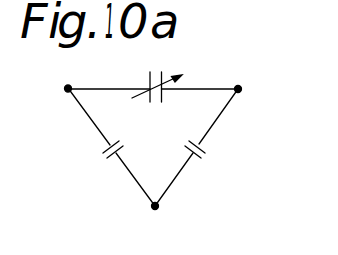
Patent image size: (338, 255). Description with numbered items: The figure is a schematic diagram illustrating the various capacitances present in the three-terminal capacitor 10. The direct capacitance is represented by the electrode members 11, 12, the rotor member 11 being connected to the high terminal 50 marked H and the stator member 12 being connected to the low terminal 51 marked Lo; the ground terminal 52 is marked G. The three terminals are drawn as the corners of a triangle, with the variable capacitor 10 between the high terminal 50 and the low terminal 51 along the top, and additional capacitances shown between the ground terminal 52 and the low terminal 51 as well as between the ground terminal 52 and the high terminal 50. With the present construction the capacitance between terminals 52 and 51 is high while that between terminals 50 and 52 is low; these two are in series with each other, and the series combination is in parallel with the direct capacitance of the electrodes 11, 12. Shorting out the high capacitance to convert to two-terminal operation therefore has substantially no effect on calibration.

The variable capacitor 10 is at (168, 66).
The rotor member 11 is at (151, 85).
The stator member 12 is at (178, 104).
The high terminal 50 is at (66, 91).
The low terminal 51 is at (255, 102).
The ground terminal 52 is at (160, 207).